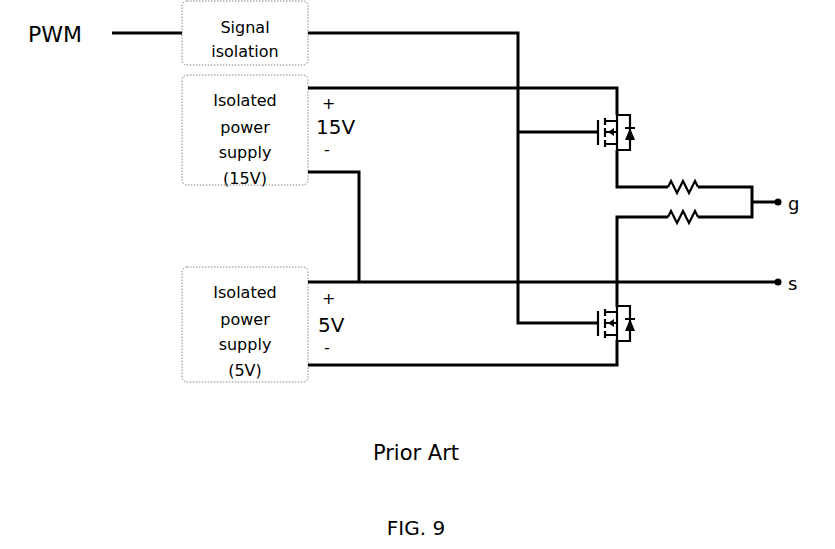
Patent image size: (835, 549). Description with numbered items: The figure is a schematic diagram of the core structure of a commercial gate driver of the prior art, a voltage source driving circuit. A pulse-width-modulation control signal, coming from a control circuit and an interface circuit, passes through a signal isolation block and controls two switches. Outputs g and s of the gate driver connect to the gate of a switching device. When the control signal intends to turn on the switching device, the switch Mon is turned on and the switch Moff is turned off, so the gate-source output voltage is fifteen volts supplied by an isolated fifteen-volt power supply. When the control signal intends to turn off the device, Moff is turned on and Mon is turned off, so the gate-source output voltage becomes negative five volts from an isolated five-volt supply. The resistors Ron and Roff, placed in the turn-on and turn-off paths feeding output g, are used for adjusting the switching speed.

The turn-on switch Mon is at (630, 119).
The turn-off switch Moff is at (634, 337).
The turn-on resistor Ron is at (681, 175).
The turn-off resistor Roff is at (681, 233).